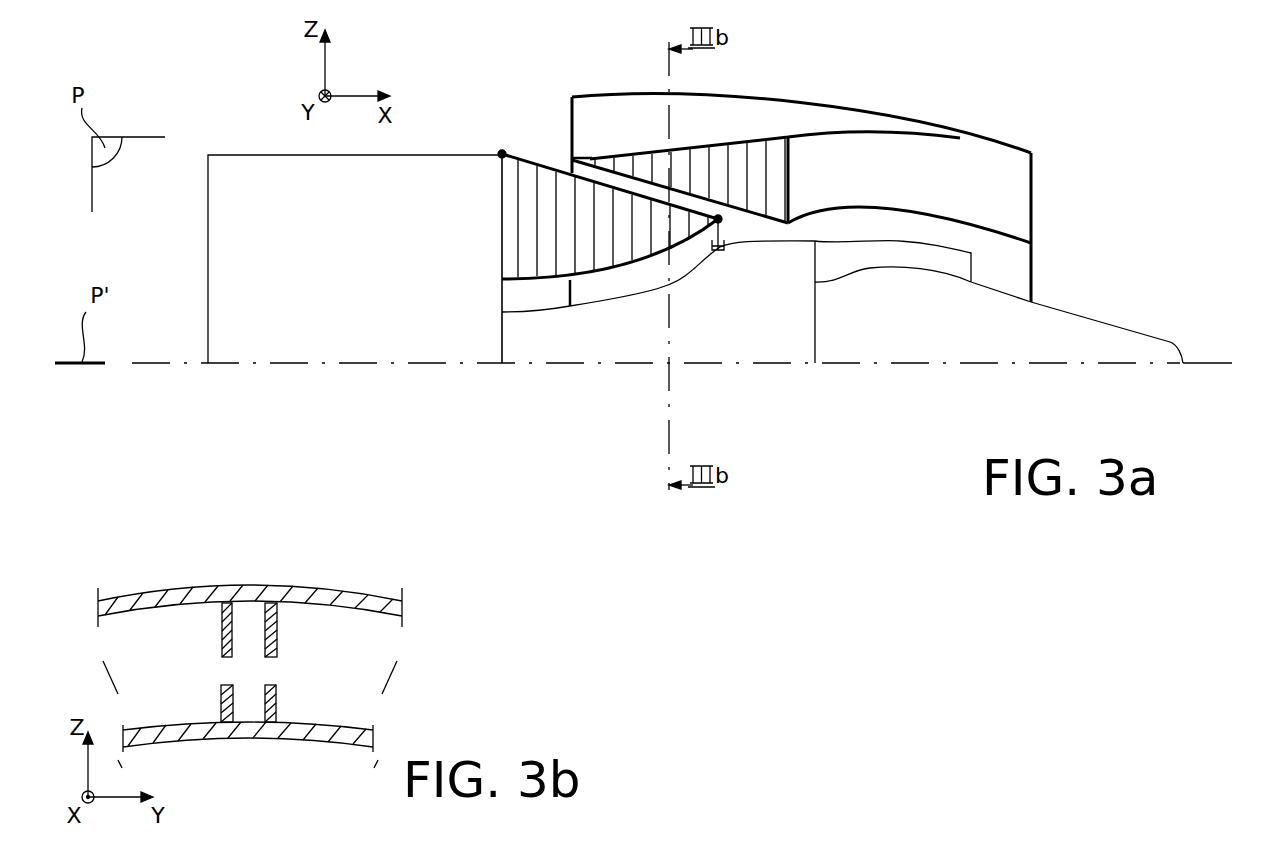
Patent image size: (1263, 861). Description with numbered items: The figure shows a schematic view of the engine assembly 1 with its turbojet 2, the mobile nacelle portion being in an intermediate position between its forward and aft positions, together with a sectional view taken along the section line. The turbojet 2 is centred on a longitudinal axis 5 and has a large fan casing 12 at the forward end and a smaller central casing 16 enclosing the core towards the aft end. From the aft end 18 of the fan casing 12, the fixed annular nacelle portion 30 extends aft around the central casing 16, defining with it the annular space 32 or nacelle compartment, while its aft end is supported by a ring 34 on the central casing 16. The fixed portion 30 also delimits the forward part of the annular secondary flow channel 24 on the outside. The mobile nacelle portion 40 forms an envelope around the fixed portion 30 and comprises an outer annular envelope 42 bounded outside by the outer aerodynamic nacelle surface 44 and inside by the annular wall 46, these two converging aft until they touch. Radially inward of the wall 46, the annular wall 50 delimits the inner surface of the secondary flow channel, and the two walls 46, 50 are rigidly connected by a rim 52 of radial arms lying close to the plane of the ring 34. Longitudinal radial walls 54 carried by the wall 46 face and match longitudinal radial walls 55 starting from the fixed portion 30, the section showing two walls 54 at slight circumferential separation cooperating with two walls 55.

In FIG. 3a, the engine assembly 1 is at (244, 127).
In FIG. 3a, the turbojet 2 is at (754, 376).
In FIG. 3a, the longitudinal axis 5 is at (1217, 363).
In FIG. 3a, the fan casing 12 is at (245, 228).
In FIG. 3a, the central casing 16 is at (595, 305).
In FIG. 3a, the aft end of the fan casing 18 is at (502, 347).
In FIG. 3a, the annular secondary flow channel 24 is at (545, 227).
In FIG. 3a, the fixed annular nacelle portion 30 is at (645, 268).
In FIG. 3b, the fixed annular nacelle portion 30 is at (313, 738).
In FIG. 3a, the annular space 32 is at (528, 309).
In FIG. 3a, the ring 34 is at (722, 229).
In FIG. 3a, the mobile nacelle portion 40 is at (999, 144).
In FIG. 3a, the outer annular envelope 42 is at (688, 131).
In FIG. 3a, the outer aerodynamic nacelle surface 44 is at (923, 128).
In FIG. 3a, the annular wall 46 is at (775, 132).
In FIG. 3b, the annular wall 46 is at (318, 596).
In FIG. 3a, the annular wall 50 is at (993, 230).
In FIG. 3a, the rim 52 is at (790, 177).
In FIG. 3a, the longitudinal radial walls 54 is at (737, 157).
In FIG. 3b, the longitudinal radial walls 54 is at (225, 658).
In FIG. 3a, the longitudinal radial walls 55 is at (552, 250).
In FIG. 3b, the longitudinal radial walls 55 is at (267, 683).